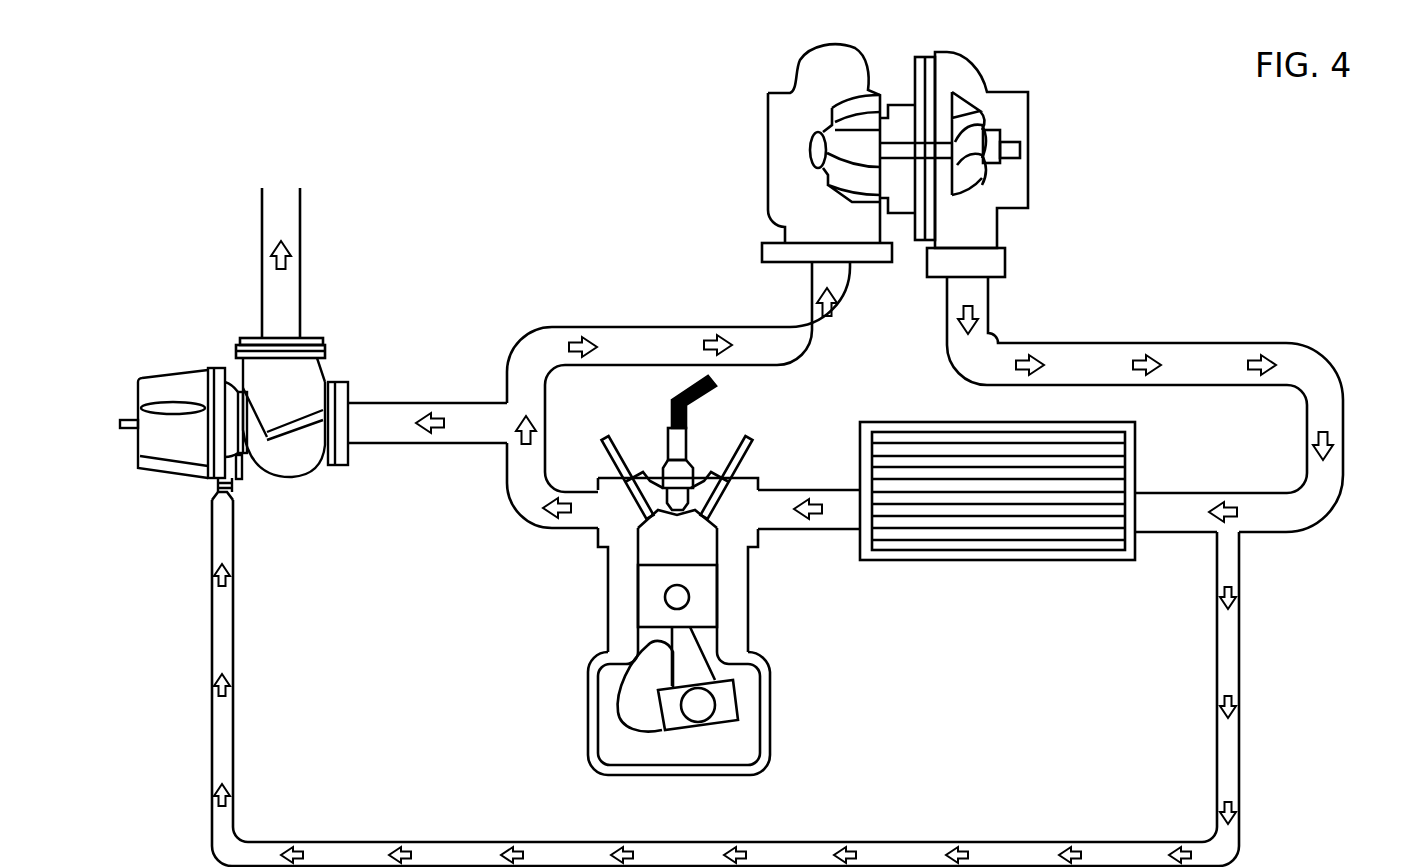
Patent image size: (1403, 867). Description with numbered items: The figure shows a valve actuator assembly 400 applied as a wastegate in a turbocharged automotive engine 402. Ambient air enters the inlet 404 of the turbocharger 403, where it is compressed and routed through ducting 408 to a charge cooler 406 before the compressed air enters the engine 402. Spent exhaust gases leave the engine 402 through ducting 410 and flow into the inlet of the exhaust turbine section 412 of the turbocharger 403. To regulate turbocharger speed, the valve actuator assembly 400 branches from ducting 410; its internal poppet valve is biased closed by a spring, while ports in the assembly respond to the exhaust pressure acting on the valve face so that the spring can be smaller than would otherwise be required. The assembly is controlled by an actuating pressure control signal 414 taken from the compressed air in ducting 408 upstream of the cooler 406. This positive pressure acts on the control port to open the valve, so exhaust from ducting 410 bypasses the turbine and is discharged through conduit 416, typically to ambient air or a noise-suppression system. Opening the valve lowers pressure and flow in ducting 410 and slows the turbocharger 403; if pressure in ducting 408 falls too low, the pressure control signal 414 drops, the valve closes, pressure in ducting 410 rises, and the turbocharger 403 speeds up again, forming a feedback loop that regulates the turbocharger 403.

The valve actuator assembly 400 is at (168, 352).
The turbocharged automotive engine 402 is at (598, 615).
The turbocharger 403 is at (901, 138).
The inlet 404 is at (1030, 150).
The charge cooler 406 is at (993, 560).
The ducting 408 is at (1208, 343).
The ducting 410 is at (606, 327).
The exhaust turbine section 412 is at (768, 145).
The actuating pressure control signal 414 is at (1239, 748).
The conduit 416 is at (282, 193).